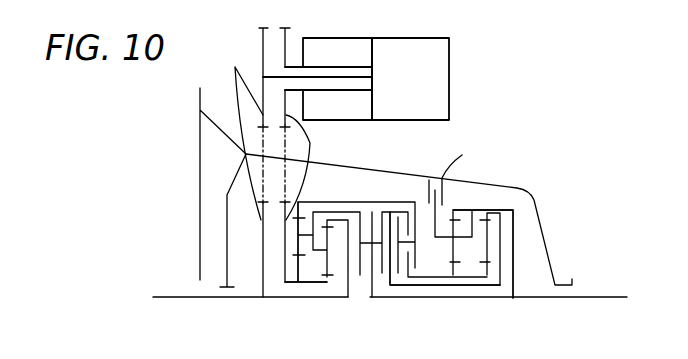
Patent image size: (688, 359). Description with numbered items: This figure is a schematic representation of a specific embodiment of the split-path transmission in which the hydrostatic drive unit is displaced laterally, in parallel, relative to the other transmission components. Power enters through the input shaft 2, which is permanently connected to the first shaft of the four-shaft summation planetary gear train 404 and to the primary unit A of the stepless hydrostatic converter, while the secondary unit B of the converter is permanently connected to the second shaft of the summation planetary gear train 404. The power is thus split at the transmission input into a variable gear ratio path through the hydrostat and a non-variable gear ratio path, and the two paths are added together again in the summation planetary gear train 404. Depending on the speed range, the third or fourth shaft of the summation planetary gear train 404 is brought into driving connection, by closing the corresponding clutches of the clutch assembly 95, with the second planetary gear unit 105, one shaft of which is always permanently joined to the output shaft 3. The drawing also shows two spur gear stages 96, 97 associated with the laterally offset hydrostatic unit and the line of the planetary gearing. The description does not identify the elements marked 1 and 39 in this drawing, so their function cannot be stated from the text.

The housing line 1 is at (392, 174).
The input shaft 2 is at (173, 297).
The output shaft 3 is at (600, 297).
The clutch member 39 is at (456, 169).
The clutch assembly 95 is at (397, 302).
The spur gear stage 96 is at (242, 128).
The spur gear stage 97 is at (310, 167).
The second planetary gear unit 105 is at (475, 302).
The summation planetary gear train 404 is at (314, 302).
The primary unit A is at (411, 93).
The secondary unit B is at (328, 53).